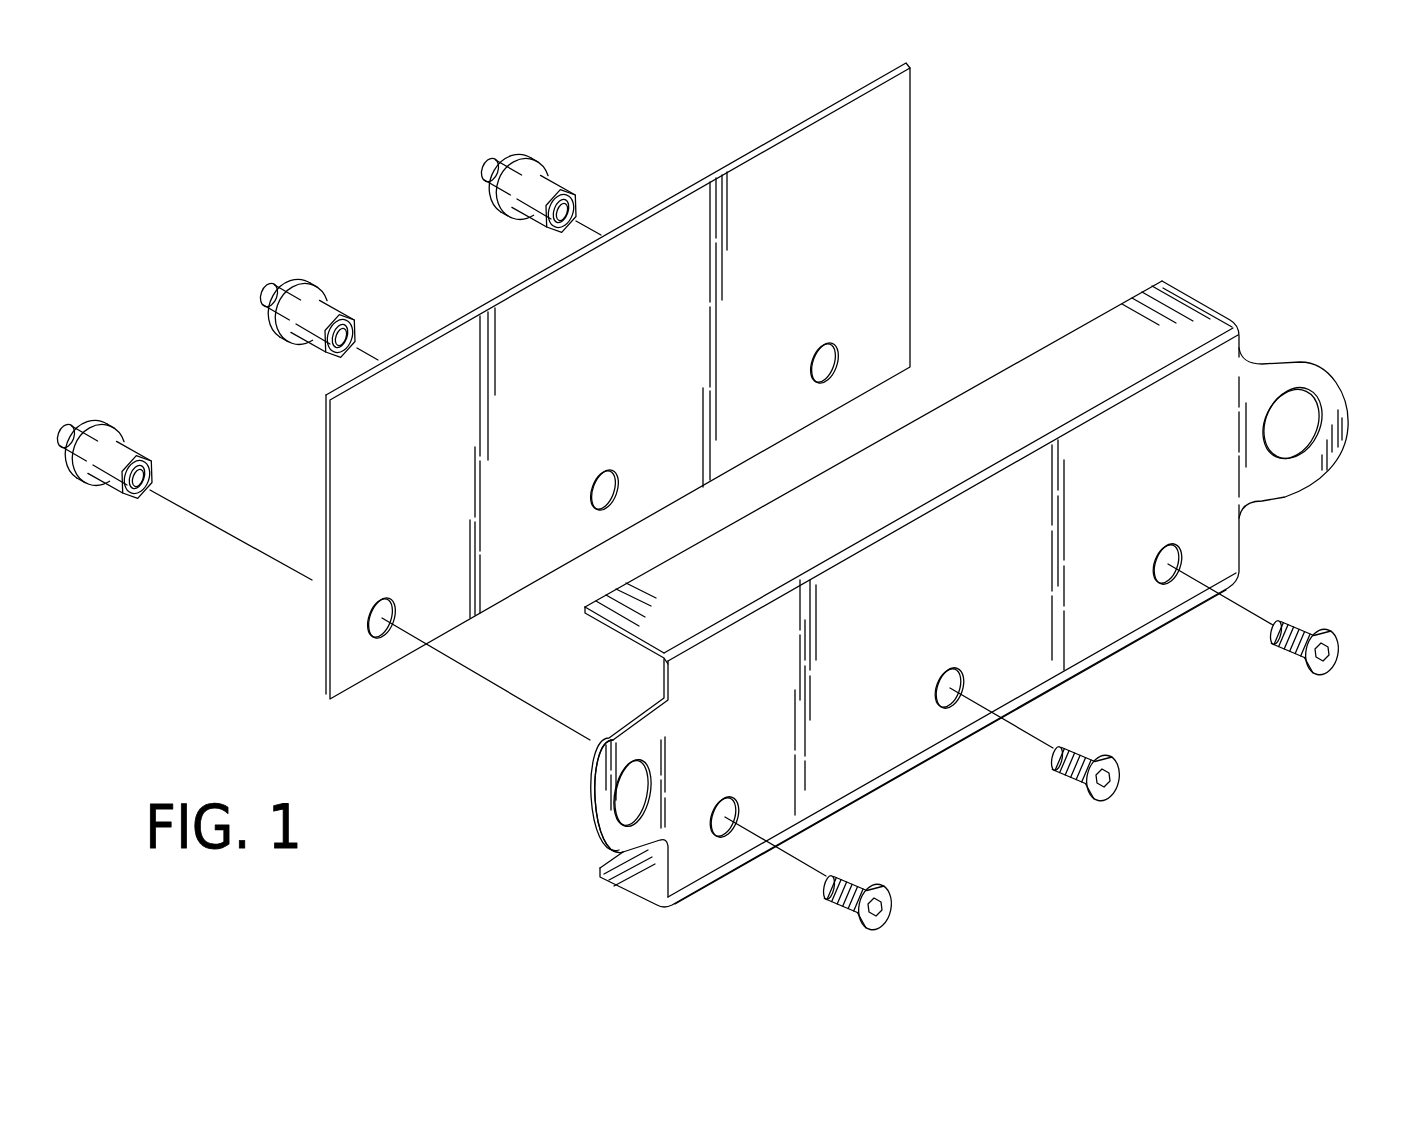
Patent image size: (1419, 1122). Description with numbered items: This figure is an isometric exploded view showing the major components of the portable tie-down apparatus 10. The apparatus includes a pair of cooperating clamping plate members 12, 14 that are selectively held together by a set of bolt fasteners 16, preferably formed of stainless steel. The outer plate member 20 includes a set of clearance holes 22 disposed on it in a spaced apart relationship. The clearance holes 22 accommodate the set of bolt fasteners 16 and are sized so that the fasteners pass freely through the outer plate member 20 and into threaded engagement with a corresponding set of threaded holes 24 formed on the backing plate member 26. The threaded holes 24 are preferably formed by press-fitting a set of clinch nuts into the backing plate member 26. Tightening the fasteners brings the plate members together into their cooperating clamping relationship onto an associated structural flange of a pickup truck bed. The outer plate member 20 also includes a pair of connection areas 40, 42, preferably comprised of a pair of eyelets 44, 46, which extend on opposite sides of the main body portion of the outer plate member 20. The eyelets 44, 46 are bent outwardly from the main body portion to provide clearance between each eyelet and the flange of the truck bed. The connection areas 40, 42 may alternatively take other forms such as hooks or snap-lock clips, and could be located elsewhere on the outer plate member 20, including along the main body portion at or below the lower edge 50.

The portable tie-down apparatus 10 is at (436, 718).
The clamping plate member 12 is at (1201, 281).
The clamping plate member 14 is at (946, 209).
The bolt fasteners 16 is at (1329, 617).
The outer plate member 20 is at (987, 607).
The clearance holes 22 is at (1149, 551).
The threaded holes 24 is at (833, 340).
The backing plate member 26 is at (639, 390).
The connection area 40 is at (584, 777).
The connection area 42 is at (1294, 350).
The eyelet 44 is at (607, 821).
The eyelet 46 is at (1308, 472).
The lower edge 50 is at (1090, 662).